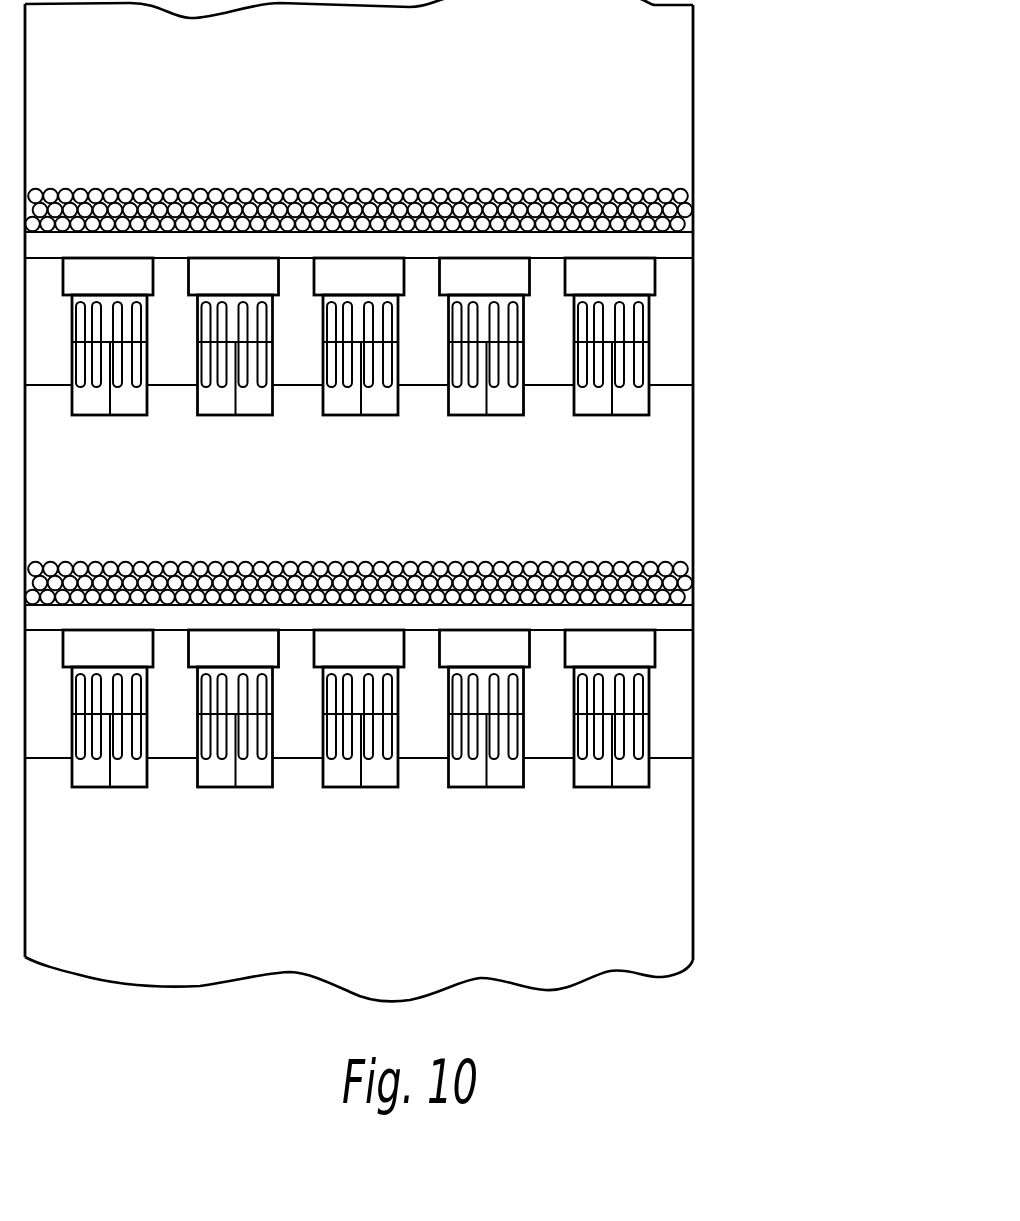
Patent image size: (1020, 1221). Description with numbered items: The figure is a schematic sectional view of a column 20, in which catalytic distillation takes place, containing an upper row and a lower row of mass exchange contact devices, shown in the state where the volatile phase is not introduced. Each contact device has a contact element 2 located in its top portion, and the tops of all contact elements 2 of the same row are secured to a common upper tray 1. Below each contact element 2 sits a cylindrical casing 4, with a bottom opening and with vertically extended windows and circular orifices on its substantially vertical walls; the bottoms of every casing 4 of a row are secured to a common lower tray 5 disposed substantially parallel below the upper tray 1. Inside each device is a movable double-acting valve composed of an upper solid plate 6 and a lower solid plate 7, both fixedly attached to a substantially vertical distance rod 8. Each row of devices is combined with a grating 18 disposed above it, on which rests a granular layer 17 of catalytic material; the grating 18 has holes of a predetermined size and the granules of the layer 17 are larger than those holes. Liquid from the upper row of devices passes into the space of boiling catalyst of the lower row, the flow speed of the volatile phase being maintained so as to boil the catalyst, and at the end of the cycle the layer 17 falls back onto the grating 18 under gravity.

The upper tray 1 is at (893, 188).
The contact element 2 is at (890, 718).
The cylindrical casing 4 is at (893, 268).
The lower tray 5 is at (611, 367).
The upper solid plate 6 is at (893, 320).
The lower solid plate 7 is at (893, 535).
The distance rod 8 is at (893, 456).
The granular layer 17 is at (893, 120).
The grating 18 is at (900, 632).
The column 20 is at (900, 818).